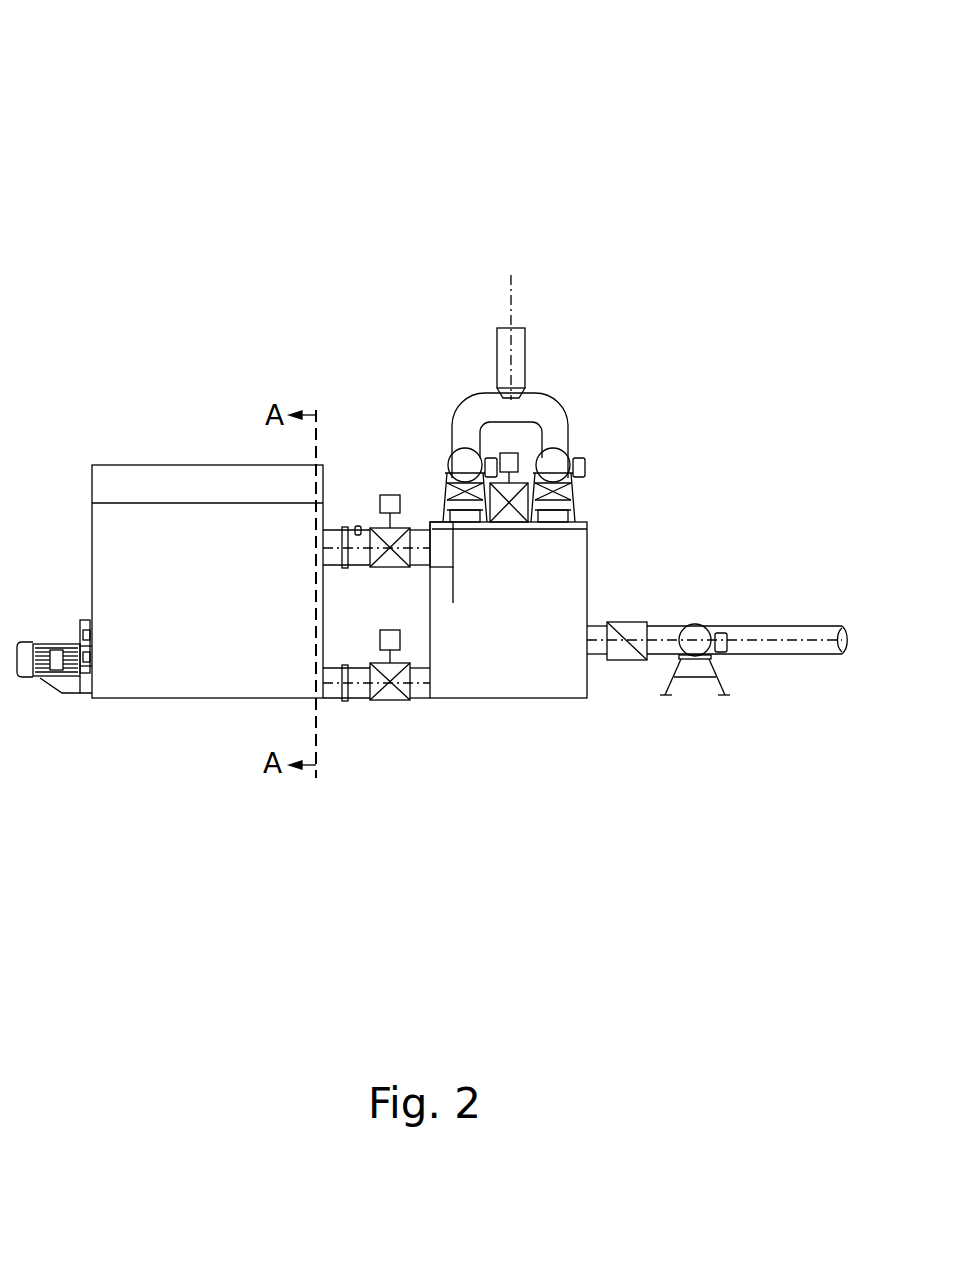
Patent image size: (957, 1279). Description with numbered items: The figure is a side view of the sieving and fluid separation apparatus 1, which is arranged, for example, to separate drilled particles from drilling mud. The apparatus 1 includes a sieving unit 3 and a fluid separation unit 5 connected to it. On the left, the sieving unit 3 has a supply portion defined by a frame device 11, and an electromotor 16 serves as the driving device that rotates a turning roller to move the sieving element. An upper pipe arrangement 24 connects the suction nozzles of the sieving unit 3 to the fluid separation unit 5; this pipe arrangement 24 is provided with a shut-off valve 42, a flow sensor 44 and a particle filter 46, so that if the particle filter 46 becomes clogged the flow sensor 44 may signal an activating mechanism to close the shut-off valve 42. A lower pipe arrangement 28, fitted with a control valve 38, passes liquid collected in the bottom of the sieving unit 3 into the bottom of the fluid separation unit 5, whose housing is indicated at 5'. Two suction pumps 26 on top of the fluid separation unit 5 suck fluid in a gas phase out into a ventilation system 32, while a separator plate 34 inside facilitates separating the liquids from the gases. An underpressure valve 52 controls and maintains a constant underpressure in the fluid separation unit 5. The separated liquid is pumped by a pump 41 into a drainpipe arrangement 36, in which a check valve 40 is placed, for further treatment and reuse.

The sieving and fluid separation apparatus 1 is at (140, 143).
The sieving unit 3 is at (186, 866).
The fluid separation unit 5 is at (513, 948).
The housing of pump section 5' is at (590, 610).
The frame device 11 is at (92, 485).
The electromotor 16 is at (52, 641).
The pipe arrangement 24 is at (340, 503).
The suction pumps 26 is at (468, 463).
The pipe arrangement 28 is at (355, 720).
The ventilation system 32 is at (525, 363).
The separator plate 34 is at (453, 575).
The drainpipe arrangement 36 is at (803, 632).
The control valve 38 is at (401, 700).
The check valve 40 is at (627, 660).
The pump 41 is at (735, 655).
The shut-off valve 42 is at (410, 528).
The flow sensor 44 is at (359, 526).
The particle filter 46 is at (345, 526).
The underpressure valve 52 is at (513, 520).